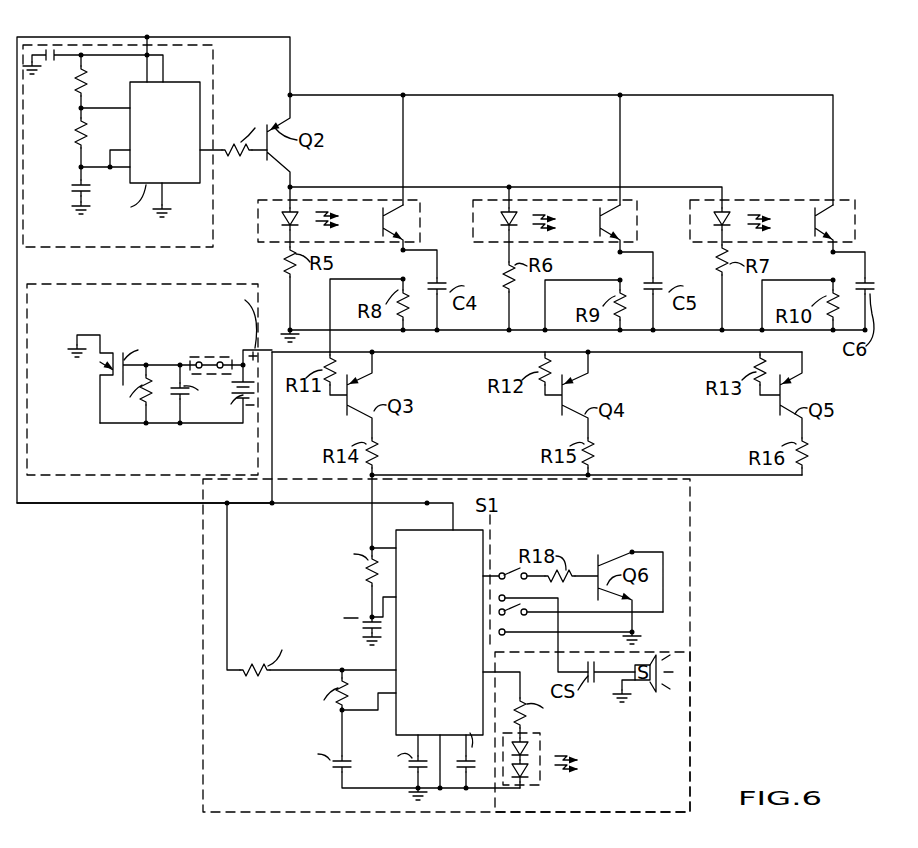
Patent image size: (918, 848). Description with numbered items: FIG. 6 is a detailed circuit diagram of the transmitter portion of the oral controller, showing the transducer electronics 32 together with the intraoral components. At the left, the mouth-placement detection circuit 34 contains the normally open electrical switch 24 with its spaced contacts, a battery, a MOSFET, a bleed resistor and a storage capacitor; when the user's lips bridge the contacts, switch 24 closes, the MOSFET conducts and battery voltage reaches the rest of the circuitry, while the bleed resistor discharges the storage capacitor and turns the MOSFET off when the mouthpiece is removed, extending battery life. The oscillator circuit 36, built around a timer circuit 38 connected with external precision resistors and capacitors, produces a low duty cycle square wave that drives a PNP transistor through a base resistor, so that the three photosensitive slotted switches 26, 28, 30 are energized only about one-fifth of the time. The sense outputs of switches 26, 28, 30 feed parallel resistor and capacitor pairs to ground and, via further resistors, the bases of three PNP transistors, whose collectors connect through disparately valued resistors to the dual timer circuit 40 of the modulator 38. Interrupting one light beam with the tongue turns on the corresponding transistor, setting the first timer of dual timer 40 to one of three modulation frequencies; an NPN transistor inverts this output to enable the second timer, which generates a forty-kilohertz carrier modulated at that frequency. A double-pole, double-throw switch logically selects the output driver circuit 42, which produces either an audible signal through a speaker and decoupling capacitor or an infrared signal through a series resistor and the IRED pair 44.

The normally open electrical switch 24 is at (183, 349).
The photosensitive slotted switch 26 is at (353, 200).
The photosensitive slotted switch 28 is at (543, 199).
The photosensitive slotted switch 30 is at (757, 200).
The transducer electronics 32 is at (662, 62).
The mouth-placement detection circuit 34 is at (149, 407).
The oscillator circuit 36 is at (213, 247).
The timer circuit 38 is at (418, 643).
The dual timer circuit 40 is at (458, 672).
The output driver circuit 42 is at (611, 732).
The IRED pair 44 is at (545, 745).